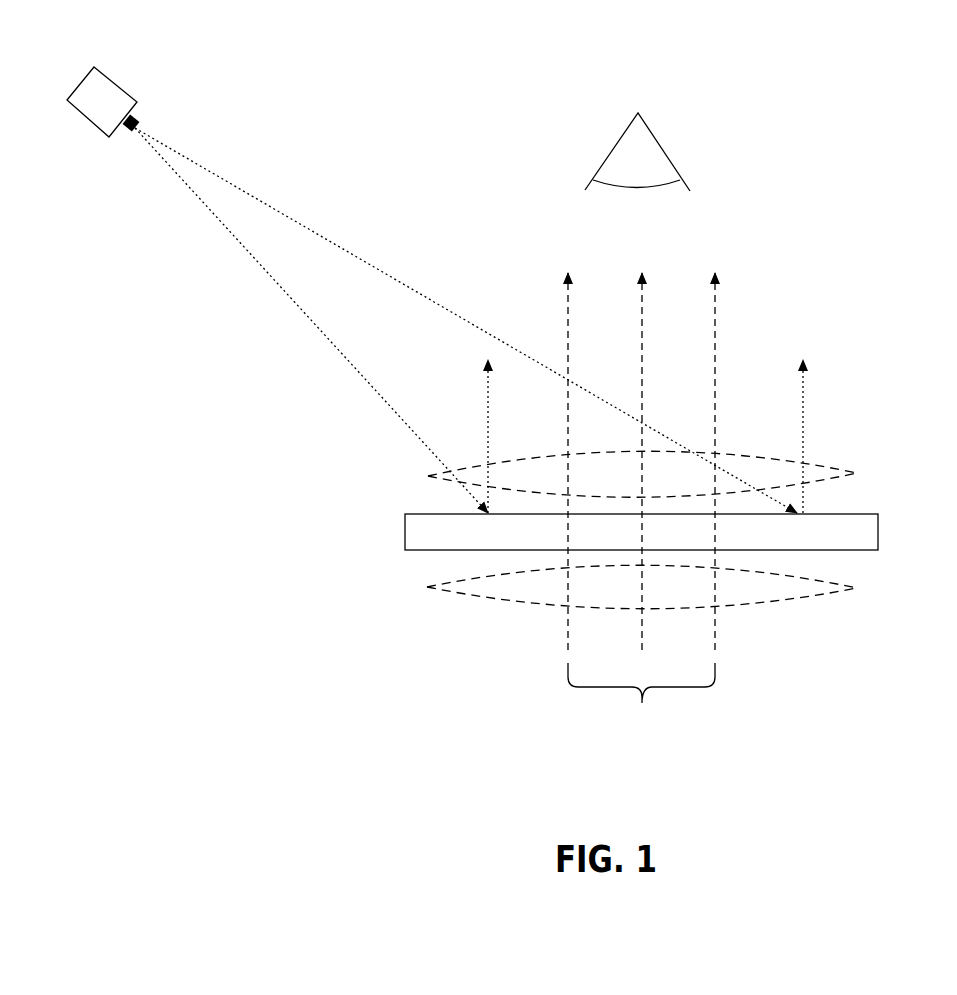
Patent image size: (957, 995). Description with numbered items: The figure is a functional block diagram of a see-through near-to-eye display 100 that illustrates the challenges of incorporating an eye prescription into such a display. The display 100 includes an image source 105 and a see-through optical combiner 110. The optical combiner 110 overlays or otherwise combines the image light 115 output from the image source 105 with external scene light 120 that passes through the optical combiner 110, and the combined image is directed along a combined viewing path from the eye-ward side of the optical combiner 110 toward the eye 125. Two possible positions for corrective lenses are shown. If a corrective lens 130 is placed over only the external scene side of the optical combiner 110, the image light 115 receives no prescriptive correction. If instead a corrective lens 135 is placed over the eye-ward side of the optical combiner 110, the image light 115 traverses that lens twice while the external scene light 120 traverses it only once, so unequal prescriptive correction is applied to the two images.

The see-through near-to-eye display 100 is at (888, 160).
The image source 105 is at (115, 83).
The see-through optical combiner 110 is at (852, 540).
The image light 115 is at (297, 249).
The external scene light 120 is at (645, 516).
The eye 125 is at (652, 169).
The corrective lens 130 is at (822, 598).
The corrective lens 135 is at (835, 468).